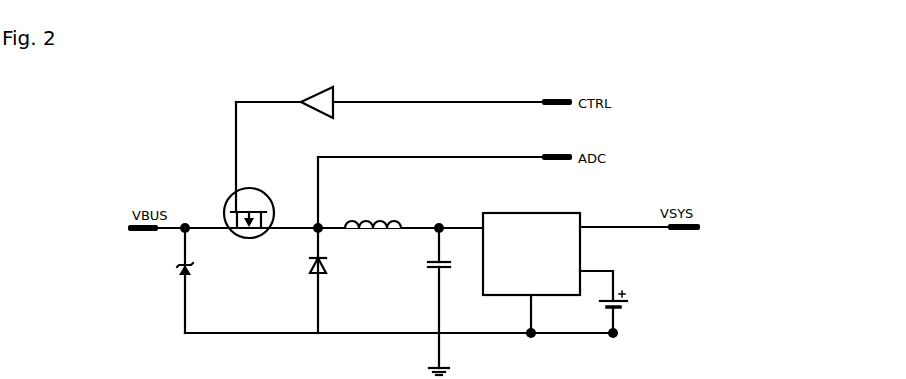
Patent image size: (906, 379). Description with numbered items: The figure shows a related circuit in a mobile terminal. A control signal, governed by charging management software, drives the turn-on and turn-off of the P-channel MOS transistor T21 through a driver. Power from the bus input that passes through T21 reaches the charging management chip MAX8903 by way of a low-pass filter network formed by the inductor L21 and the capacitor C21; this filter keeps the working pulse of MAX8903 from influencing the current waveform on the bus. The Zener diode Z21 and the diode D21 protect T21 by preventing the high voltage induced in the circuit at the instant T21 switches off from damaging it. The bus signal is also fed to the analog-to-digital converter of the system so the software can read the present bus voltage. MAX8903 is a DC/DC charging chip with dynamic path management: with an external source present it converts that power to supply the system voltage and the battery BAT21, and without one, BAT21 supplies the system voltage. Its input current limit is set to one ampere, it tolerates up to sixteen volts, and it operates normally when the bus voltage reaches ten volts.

The P-channel Metal Oxide Semiconductor (PMOS) T21 is at (249, 170).
The Zener diode Z21 is at (173, 280).
The diode D21 is at (338, 280).
The inductor L21 is at (373, 214).
The capacitor C21 is at (424, 280).
The charging management chip MAX8903 is at (531, 254).
The battery BAT21 is at (619, 304).